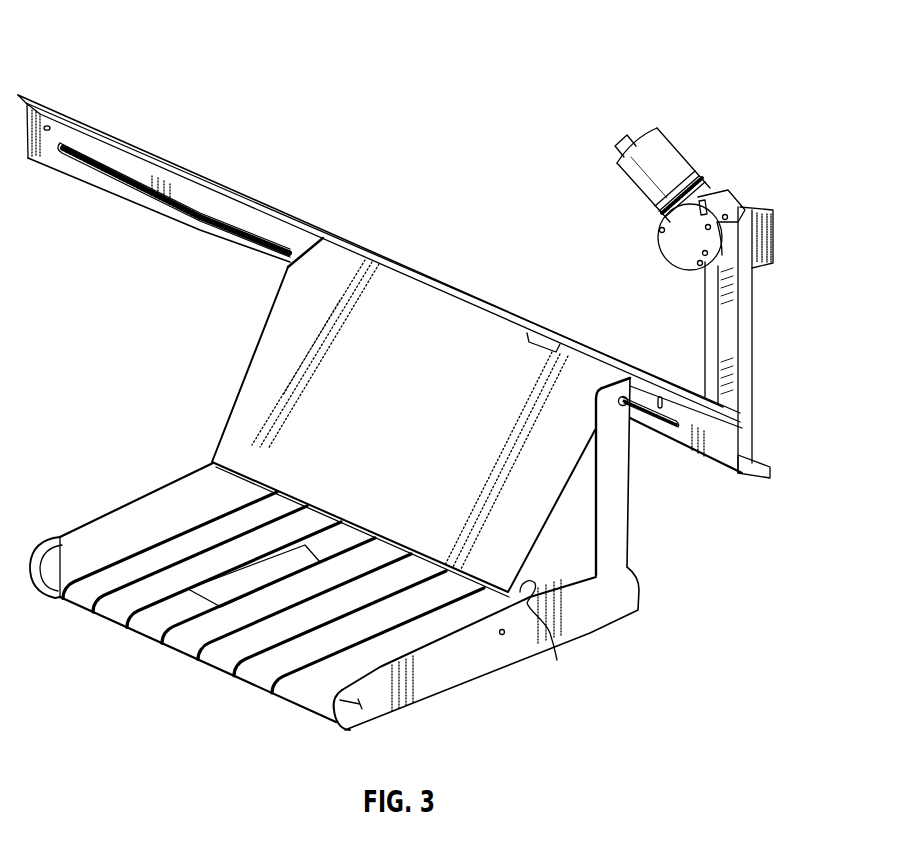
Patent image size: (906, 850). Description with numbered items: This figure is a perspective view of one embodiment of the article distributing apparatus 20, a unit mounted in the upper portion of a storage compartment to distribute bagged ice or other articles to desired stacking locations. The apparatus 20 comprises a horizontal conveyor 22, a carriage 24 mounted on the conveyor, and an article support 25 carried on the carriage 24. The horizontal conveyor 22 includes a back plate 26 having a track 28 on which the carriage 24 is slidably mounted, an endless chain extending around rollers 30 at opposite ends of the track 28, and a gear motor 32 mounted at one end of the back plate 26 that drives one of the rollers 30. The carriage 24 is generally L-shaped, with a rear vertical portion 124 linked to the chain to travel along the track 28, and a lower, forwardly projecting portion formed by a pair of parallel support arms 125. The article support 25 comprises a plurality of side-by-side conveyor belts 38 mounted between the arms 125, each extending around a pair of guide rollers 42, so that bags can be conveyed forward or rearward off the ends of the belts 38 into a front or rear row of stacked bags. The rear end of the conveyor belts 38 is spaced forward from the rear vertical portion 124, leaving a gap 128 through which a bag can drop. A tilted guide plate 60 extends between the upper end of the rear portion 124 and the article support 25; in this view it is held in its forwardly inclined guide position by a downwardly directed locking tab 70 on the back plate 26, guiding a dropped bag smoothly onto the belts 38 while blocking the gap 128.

The article distributing apparatus 20 is at (118, 47).
The horizontal conveyor 22 is at (744, 207).
The carriage 24 is at (566, 622).
The article support 25 is at (272, 578).
The back plate 26 is at (214, 203).
The track 28 is at (670, 426).
The rollers 30 is at (752, 448).
The gear motor 32 is at (678, 143).
The conveyor belts 38 is at (200, 658).
The guide rollers 42 is at (158, 637).
The tilted guide plate 60 is at (250, 400).
The locking tab 70 is at (546, 345).
The rear vertical portion 124 is at (517, 554).
The support arms 125 is at (43, 536).
The gap 128 is at (553, 648).